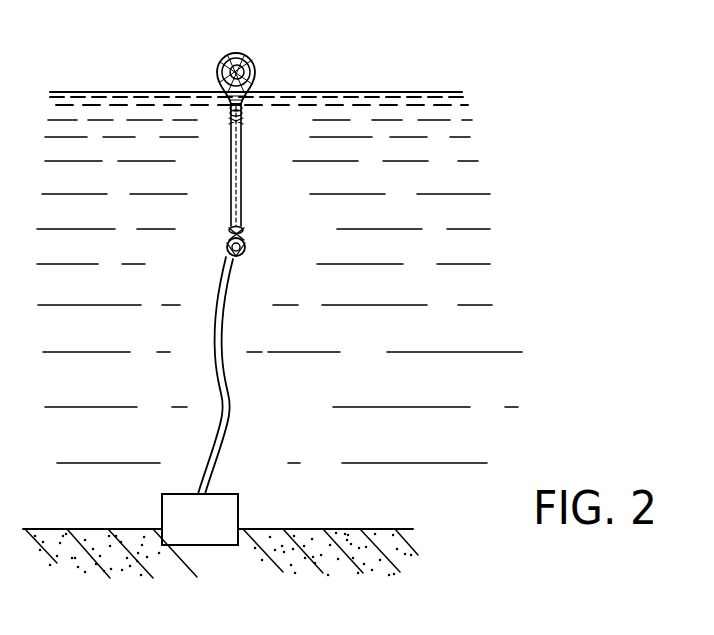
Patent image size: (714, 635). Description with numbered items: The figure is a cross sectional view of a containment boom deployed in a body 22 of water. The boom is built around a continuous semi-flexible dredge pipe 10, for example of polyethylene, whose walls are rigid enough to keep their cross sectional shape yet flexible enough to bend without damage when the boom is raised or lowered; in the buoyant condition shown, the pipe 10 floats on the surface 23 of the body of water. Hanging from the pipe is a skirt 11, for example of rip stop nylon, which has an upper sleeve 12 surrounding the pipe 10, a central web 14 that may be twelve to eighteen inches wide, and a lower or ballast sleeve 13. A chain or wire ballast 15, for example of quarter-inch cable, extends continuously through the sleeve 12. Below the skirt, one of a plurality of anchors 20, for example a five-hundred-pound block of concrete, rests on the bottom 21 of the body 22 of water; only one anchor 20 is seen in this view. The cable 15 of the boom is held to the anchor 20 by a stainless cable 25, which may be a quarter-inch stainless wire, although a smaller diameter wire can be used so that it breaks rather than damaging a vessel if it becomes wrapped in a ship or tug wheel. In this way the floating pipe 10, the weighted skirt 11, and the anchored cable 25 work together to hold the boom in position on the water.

The semi-flexible dredge pipe 10 is at (238, 61).
The skirt 11 is at (262, 165).
The upper sleeve 12 is at (227, 57).
The lower or ballast sleeve 13 is at (264, 266).
The central web 14 is at (240, 198).
The chain or wire ballast 15 is at (237, 262).
The anchor 20 is at (239, 540).
The bottom 21 is at (331, 529).
The body of water 22 is at (132, 338).
The surface 23 is at (400, 92).
The stainless cable 25 is at (224, 428).